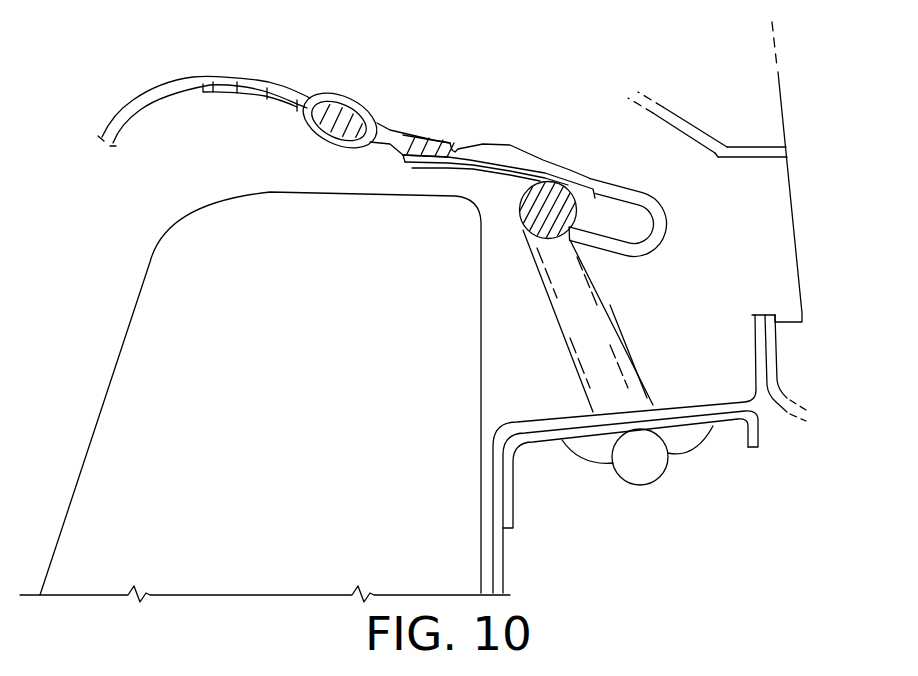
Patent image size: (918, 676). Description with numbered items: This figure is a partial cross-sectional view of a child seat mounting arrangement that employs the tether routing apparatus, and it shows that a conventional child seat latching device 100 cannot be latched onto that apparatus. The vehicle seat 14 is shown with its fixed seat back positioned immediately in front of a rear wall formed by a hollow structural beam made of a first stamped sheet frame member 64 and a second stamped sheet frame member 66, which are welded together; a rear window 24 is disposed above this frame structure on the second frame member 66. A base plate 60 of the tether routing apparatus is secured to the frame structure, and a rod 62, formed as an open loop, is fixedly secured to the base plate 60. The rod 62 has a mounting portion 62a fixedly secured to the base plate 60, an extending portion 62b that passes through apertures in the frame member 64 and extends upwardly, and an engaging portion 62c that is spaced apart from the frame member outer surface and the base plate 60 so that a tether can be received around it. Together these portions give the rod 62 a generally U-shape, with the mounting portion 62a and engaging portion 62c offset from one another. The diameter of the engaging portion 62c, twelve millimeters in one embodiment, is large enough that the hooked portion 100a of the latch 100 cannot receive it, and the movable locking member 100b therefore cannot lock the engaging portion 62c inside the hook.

The vehicle seat 14 is at (127, 330).
The rear window 24 is at (783, 115).
The base plate 60 is at (758, 450).
The rod 62 is at (619, 312).
The mounting portion 62a is at (643, 473).
The extending portion 62b is at (562, 327).
The engaging portion 62c is at (550, 200).
The first stamped sheet frame member 64 is at (493, 563).
The second stamped sheet frame member 66 is at (785, 392).
The child seat latching device 100 is at (525, 140).
The hooked portion 100a is at (660, 222).
The movable locking member 100b is at (500, 175).